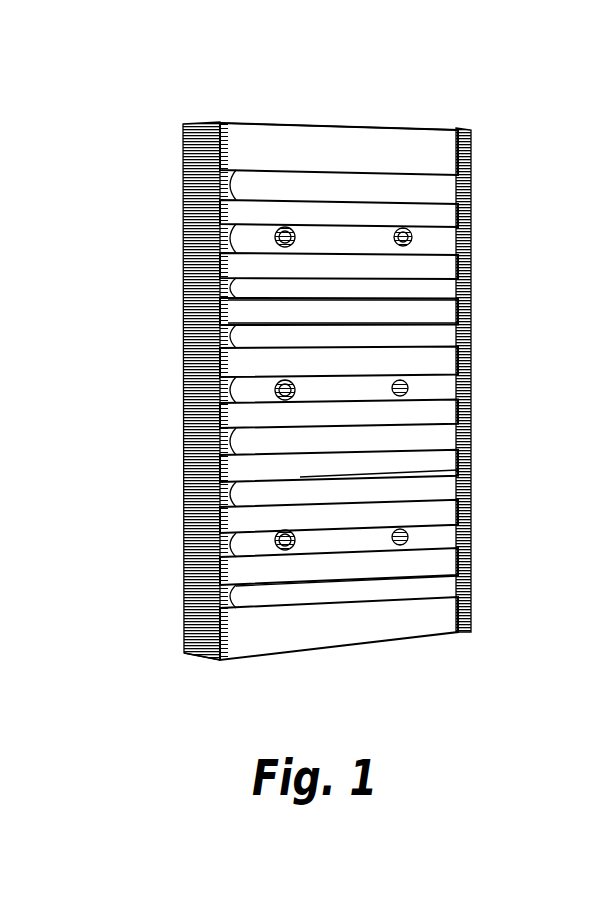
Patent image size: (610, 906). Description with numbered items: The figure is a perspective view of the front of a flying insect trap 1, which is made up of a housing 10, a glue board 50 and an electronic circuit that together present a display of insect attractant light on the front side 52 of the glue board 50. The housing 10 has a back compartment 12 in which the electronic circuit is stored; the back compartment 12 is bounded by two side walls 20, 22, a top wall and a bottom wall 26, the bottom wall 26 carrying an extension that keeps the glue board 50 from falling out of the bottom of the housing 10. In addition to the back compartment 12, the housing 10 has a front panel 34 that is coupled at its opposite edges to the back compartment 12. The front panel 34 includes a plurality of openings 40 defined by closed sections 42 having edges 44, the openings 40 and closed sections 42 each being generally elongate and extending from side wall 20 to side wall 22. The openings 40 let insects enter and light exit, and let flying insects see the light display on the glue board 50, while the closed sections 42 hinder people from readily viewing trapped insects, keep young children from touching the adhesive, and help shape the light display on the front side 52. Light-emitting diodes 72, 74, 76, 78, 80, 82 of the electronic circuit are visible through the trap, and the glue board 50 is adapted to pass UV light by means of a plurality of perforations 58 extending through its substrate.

The flying insect trap 1 is at (440, 92).
The housing 10 is at (448, 619).
The back compartment 12 is at (170, 175).
The side wall 20 is at (218, 477).
The side wall 22 is at (465, 530).
The bottom wall 26 is at (222, 655).
The front panel 34 is at (445, 153).
The openings 40 is at (435, 290).
The closed sections 42 is at (407, 272).
The edges 44 is at (280, 303).
The glue board 50 is at (250, 597).
The front side 52 is at (430, 487).
The perforation 58 is at (288, 228).
The light-emitting diode 72 is at (289, 550).
The light-emitting diode 74 is at (290, 392).
The light-emitting diode 76 is at (276, 240).
The light-emitting diode 78 is at (400, 230).
The light-emitting diode 80 is at (408, 390).
The light-emitting diode 82 is at (402, 538).